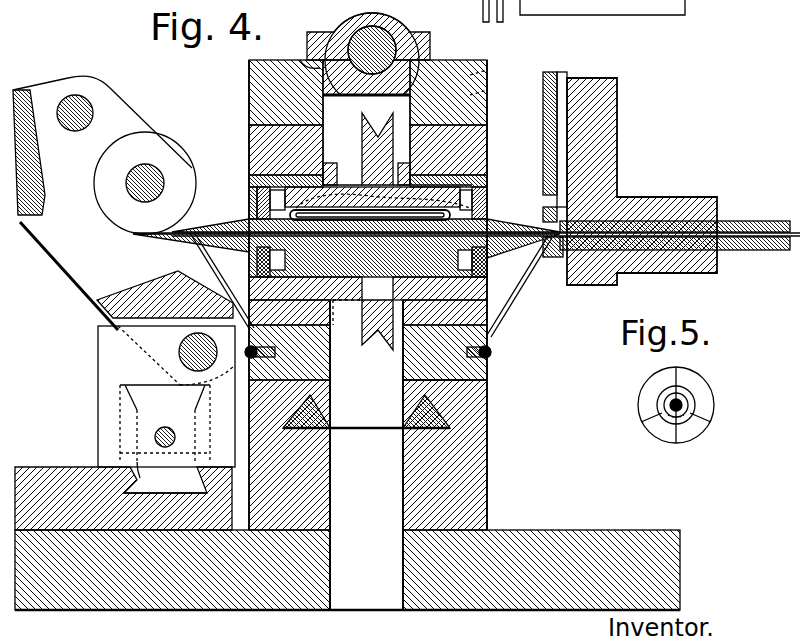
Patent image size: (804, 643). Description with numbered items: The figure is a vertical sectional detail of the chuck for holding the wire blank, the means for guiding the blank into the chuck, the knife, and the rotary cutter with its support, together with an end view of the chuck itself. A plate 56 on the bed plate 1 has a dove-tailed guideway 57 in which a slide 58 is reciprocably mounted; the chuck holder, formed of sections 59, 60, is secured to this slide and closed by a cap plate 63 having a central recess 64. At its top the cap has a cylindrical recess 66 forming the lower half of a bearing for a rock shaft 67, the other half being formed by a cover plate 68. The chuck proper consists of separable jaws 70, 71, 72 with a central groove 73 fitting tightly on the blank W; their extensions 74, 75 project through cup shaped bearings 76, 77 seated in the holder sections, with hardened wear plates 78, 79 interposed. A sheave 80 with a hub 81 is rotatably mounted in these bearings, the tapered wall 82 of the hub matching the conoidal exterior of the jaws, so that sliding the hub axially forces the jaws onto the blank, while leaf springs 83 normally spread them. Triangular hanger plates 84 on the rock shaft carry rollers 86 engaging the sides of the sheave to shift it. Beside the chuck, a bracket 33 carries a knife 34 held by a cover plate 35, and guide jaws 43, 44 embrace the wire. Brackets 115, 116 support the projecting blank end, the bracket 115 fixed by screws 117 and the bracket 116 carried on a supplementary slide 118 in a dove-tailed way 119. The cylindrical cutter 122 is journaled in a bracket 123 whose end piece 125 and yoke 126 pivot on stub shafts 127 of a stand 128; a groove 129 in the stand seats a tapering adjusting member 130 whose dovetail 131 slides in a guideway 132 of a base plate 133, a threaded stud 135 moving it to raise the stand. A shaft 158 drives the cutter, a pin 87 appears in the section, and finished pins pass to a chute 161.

In FIG. 4, the bed plate 1 is at (265, 606).
In FIG. 4, the bracket 33 is at (617, 120).
In FIG. 4, the knife 34 is at (560, 135).
In FIG. 4, the cover plate 35 is at (543, 106).
In FIG. 4, the guide jaw 43 is at (610, 190).
In FIG. 4, the guide jaw 44 is at (563, 258).
In FIG. 4, the plate 56 is at (488, 470).
In FIG. 4, the dove-tailed guideway 57 is at (490, 405).
In FIG. 4, the slide 58 is at (490, 378).
In FIG. 4, the chuck holder section 59 is at (492, 313).
In FIG. 4, the chuck holder section 60 is at (249, 297).
In FIG. 4, the cap plate 63 is at (472, 70).
In FIG. 4, the central recess 64 is at (436, 63).
In FIG. 4, the cylindrical recess 66 is at (298, 68).
In FIG. 4, the rock shaft 67 is at (362, 36).
In FIG. 4, the cover plate 68 is at (408, 35).
In FIG. 5, the chuck jaw 70 is at (700, 395).
In FIG. 4, the chuck jaw 71 is at (487, 221).
In FIG. 5, the chuck jaw 71 is at (645, 388).
In FIG. 4, the chuck jaw 72 is at (487, 268).
In FIG. 5, the chuck jaw 72 is at (690, 430).
In FIG. 5, the central groove 73 is at (676, 410).
In FIG. 4, the jaw extension 74 is at (505, 245).
In FIG. 4, the jaw extension 75 is at (232, 222).
In FIG. 4, the cup shaped bearing 76 is at (490, 187).
In FIG. 4, the cup shaped bearing 77 is at (249, 181).
In FIG. 4, the wear plate 78 is at (492, 203).
In FIG. 4, the wear plate 79 is at (257, 205).
In FIG. 4, the sheave 80 is at (362, 128).
In FIG. 4, the hub 81 is at (344, 190).
In FIG. 4, the tapered wall 82 is at (415, 203).
In FIG. 4, the leaf spring 83 is at (290, 215).
In FIG. 4, the triangular plate 84 is at (490, 87).
In FIG. 4, the roller 86 is at (328, 165).
In FIG. 4, the lower punch 87 is at (360, 318).
In FIG. 4, the bracket 115 is at (214, 252).
In FIG. 4, the bracket 116 is at (516, 292).
In FIG. 4, the screw 117 is at (333, 366).
In FIG. 4, the supplementary slide 118 is at (498, 355).
In FIG. 4, the dove-tailed way 119 is at (490, 332).
In FIG. 4, the cylindrical cutter 122 is at (152, 145).
In FIG. 4, the cutter bracket 123 is at (52, 262).
In FIG. 4, the bracket end piece 125 is at (83, 272).
In FIG. 4, the yoke 126 is at (25, 105).
In FIG. 4, the stub shaft 127 is at (188, 352).
In FIG. 4, the stand 128 is at (105, 368).
In FIG. 4, the inclined dove-tailed groove 129 is at (120, 392).
In FIG. 4, the adjusting member 130 is at (140, 410).
In FIG. 4, the dovetail 131 is at (137, 455).
In FIG. 4, the dove-tail guideway 132 is at (170, 490).
In FIG. 4, the base plate 133 is at (42, 470).
In FIG. 4, the screw threaded stud 135 is at (163, 428).
In FIG. 4, the shaft 158 is at (87, 103).
In FIG. 4, the chute 161 is at (502, 12).
In FIG. 4, the work W is at (795, 225).